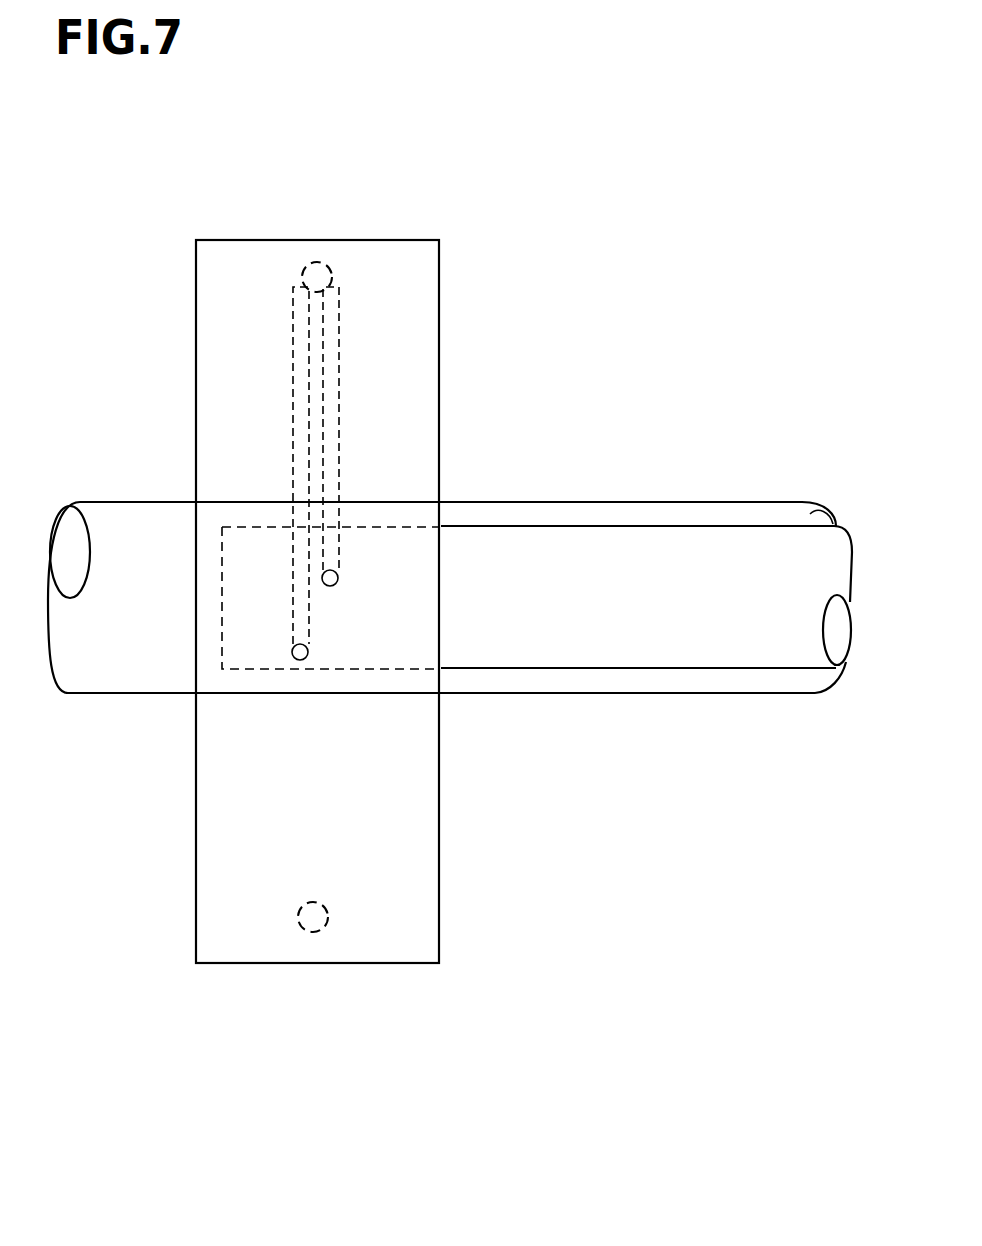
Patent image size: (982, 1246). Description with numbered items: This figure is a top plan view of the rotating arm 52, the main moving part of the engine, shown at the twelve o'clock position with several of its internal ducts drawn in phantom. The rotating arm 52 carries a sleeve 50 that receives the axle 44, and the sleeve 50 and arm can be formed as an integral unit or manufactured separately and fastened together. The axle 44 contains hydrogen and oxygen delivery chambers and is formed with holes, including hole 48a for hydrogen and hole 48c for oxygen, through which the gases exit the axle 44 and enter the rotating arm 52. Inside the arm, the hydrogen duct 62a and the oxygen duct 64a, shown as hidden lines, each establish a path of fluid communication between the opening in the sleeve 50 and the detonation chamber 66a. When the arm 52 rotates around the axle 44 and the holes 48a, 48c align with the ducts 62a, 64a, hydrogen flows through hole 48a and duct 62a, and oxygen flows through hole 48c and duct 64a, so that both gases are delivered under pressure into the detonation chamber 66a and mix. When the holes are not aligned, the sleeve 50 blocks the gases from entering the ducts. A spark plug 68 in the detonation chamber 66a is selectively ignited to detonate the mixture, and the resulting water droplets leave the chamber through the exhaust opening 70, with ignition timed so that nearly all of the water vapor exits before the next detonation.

The axle 44 is at (728, 568).
The sleeve 50 is at (688, 515).
The rotating arm 52 is at (117, 857).
The detonation chamber 66a is at (278, 470).
The oxygen duct 64a is at (300, 390).
The hydrogen duct 62a is at (333, 390).
The hole 48a is at (336, 582).
The hole 48c is at (300, 655).
The spark plug 68 is at (315, 270).
The exhaust opening 70 is at (345, 240).